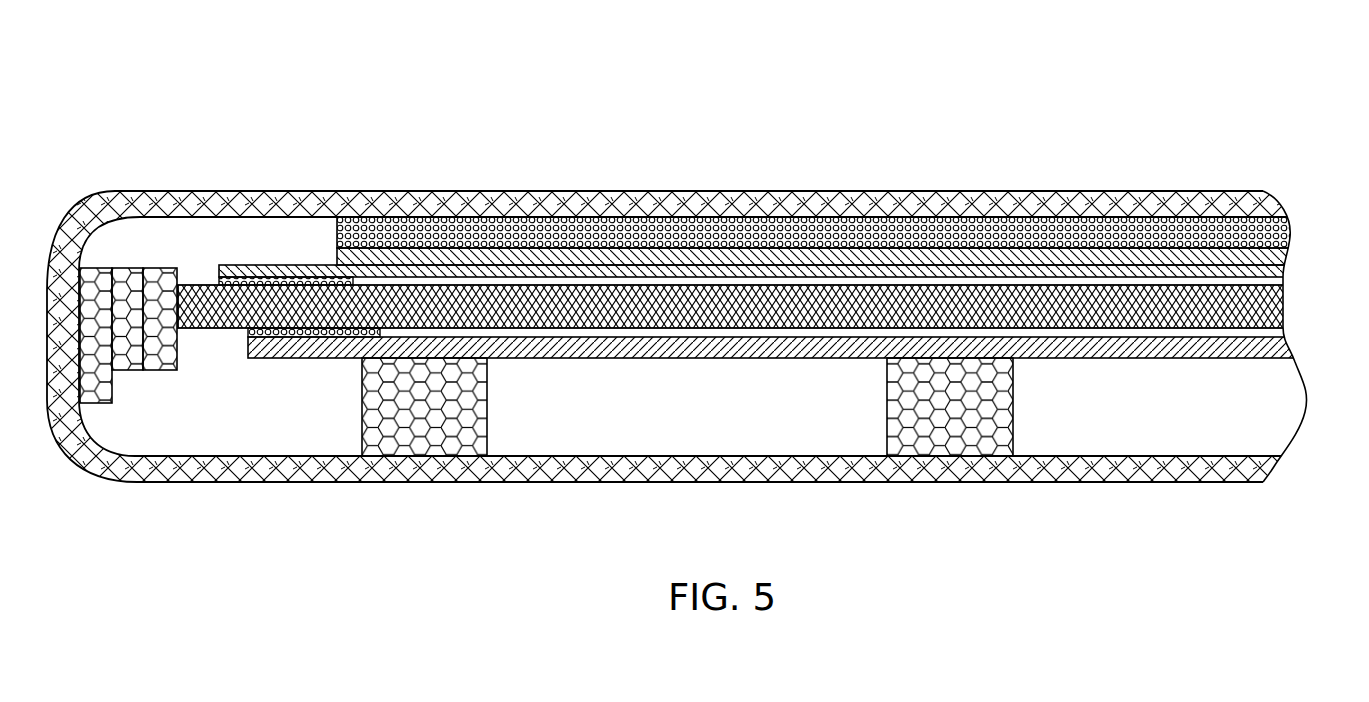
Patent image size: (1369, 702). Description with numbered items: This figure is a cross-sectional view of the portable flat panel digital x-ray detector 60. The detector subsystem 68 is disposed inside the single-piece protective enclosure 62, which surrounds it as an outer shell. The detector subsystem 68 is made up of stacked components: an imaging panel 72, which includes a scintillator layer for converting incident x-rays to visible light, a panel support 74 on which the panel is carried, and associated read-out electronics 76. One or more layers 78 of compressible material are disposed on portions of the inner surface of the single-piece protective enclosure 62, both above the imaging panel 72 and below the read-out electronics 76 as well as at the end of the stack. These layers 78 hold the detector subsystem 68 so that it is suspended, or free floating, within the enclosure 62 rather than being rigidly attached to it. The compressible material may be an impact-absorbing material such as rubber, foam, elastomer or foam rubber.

The portable flat panel digital x-ray detector 60 is at (708, 255).
The single-piece protective enclosure 62 is at (530, 196).
The detector subsystem 68 is at (243, 257).
The imaging panel 72 is at (341, 263).
The panel support 74 is at (1263, 303).
The read-out electronics 76 is at (622, 342).
The layers of compressible material 78 is at (390, 222).